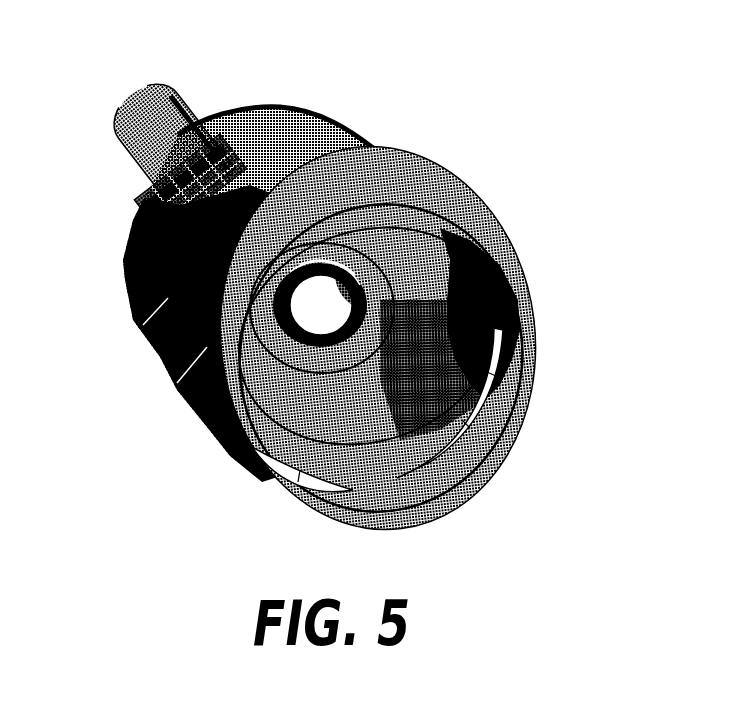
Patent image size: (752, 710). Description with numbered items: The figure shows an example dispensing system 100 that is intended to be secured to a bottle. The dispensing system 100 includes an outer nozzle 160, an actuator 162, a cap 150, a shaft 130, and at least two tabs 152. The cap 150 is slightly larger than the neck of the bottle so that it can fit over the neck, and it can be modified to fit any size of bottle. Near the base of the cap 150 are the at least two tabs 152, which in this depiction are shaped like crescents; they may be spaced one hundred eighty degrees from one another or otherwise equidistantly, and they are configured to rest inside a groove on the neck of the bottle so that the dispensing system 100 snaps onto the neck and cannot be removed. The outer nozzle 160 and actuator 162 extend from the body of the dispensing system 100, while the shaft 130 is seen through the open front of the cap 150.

The dispensing system 100 is at (329, 287).
The shaft 130 is at (327, 307).
The cap 150 is at (397, 178).
The tabs 152 is at (270, 480).
The outer nozzle 160 is at (117, 97).
The actuator 162 is at (157, 193).